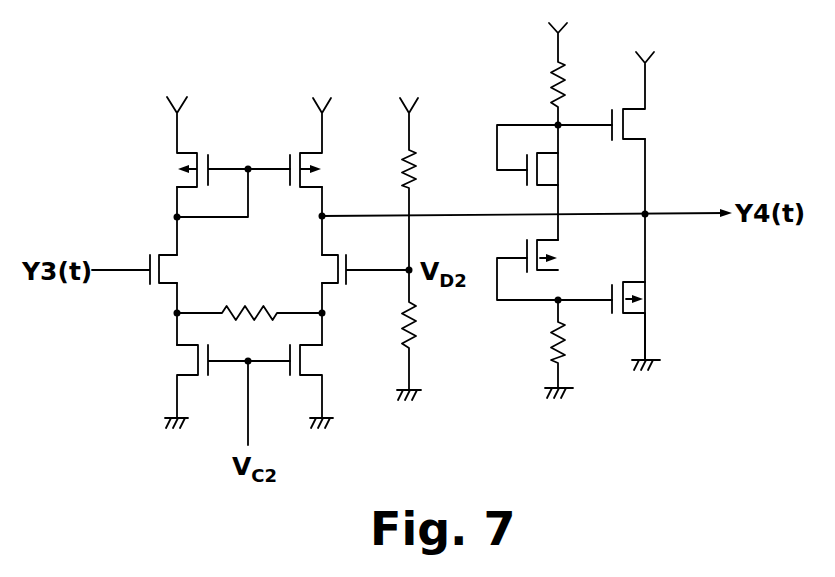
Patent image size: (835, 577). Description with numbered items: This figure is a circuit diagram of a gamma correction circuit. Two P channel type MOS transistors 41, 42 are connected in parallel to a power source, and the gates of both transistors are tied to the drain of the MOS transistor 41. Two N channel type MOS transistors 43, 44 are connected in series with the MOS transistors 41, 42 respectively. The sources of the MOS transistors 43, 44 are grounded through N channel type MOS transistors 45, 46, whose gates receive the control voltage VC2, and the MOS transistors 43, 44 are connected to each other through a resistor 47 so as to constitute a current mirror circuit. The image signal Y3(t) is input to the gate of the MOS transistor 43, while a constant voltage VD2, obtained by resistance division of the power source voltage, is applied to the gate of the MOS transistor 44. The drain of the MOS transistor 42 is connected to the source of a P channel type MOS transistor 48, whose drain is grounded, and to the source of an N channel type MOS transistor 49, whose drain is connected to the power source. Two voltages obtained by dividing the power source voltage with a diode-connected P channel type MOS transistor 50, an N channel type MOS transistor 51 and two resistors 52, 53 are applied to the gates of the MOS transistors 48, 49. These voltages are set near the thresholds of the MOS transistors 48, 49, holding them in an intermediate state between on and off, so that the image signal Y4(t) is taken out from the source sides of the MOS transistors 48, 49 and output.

The P channel type MOS transistor 41 is at (170, 168).
The P channel type MOS transistor 42 is at (327, 158).
The N channel type MOS transistor 43 is at (158, 248).
The N channel type MOS transistor 44 is at (337, 288).
The N channel type MOS transistor 45 is at (176, 362).
The N channel type MOS transistor 46 is at (327, 366).
The resistor 47 is at (247, 300).
The P channel type MOS transistor 48 is at (653, 295).
The N channel type MOS transistor 49 is at (650, 123).
The diode-connected P channel type MOS transistor 50 is at (561, 250).
The N channel type MOS transistor 51 is at (561, 172).
The resistor 52 is at (545, 345).
The resistor 53 is at (543, 85).